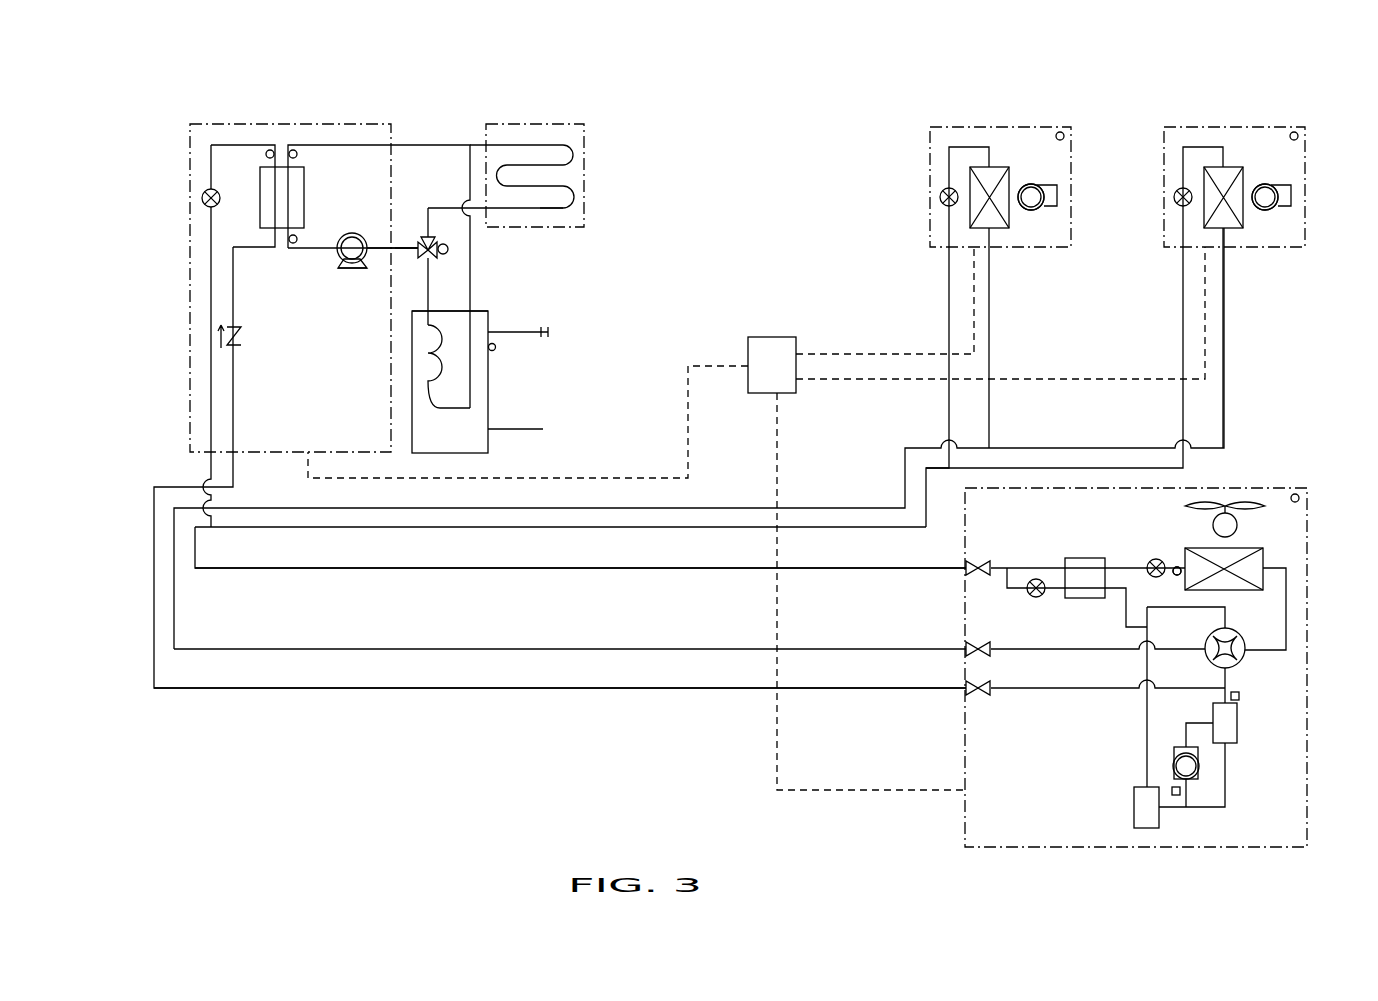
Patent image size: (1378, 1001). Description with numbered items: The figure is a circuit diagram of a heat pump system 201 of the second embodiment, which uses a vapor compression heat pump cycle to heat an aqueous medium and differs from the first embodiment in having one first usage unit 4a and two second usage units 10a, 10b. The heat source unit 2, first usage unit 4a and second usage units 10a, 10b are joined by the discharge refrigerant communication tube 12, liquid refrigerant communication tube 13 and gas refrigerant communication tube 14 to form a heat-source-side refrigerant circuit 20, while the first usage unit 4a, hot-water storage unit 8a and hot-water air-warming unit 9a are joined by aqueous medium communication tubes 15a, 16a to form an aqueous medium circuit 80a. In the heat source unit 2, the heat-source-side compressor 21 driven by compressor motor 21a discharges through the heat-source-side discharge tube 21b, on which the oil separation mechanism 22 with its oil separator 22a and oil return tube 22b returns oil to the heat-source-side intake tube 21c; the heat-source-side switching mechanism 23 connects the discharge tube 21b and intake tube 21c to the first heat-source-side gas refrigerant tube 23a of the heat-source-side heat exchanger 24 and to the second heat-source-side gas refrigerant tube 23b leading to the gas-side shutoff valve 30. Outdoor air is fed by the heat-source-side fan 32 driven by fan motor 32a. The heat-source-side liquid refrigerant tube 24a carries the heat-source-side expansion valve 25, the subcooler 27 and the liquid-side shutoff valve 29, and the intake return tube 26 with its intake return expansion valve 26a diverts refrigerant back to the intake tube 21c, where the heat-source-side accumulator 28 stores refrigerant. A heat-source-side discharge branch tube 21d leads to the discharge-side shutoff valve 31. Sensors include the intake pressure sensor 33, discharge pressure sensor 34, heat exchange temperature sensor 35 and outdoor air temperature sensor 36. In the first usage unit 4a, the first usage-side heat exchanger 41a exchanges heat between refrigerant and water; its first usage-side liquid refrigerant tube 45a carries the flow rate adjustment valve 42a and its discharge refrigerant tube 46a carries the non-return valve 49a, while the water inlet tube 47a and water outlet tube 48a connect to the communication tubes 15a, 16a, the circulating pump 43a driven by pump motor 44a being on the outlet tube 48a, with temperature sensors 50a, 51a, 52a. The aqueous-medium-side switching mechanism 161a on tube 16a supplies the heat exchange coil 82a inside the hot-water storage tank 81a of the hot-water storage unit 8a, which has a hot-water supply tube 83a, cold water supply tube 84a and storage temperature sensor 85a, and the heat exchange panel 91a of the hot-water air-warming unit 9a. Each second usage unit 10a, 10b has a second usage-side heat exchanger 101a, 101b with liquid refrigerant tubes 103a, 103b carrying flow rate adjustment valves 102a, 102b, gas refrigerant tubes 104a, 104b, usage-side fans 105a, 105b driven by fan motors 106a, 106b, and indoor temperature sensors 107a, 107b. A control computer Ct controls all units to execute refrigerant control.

The first usage unit 4a is at (355, 124).
The first usage-side water inlet tube 47a is at (305, 145).
The aqueous medium communication tube 15a is at (416, 145).
The aqueous medium circuit 80a is at (438, 130).
The hot-water air-warming unit 9a is at (548, 124).
The heat exchange panel 91a is at (547, 208).
The first usage-side heat exchange temperature sensor 50a is at (266, 155).
The aqueous medium inlet temperature sensor 51a is at (297, 155).
The aqueous medium outlet temperature sensor 52a is at (297, 239).
The first usage-side heat exchanger 41a is at (304, 196).
The first usage-side flow rate adjustment valve 42a is at (218, 205).
The first usage-side liquid refrigerant tube 45a is at (190, 290).
The first usage-side discharge refrigerant tube 46a is at (235, 284).
The first usage-side discharge non-return valve 49a is at (243, 340).
The circulating pump motor 44a is at (360, 236).
The circulating pump 43a is at (346, 280).
The first usage-side water outlet tube 48a is at (382, 247).
The aqueous medium communication tube 16a is at (408, 252).
The aqueous-medium-side switching mechanism 161a is at (448, 249).
The hot-water storage unit 8a is at (496, 318).
The hot-water storage tank 81a is at (484, 313).
The heat exchange coil 82a is at (426, 398).
The hot-water supply tube 83a is at (519, 333).
The hot-water storage temperature sensor 85a is at (493, 351).
The cold water supply tube 84a is at (519, 430).
The liquid refrigerant communication tube 13 is at (487, 570).
The gas refrigerant communication tube 14 is at (547, 649).
The discharge refrigerant communication tube 12 is at (487, 690).
The control computer Ct is at (750, 340).
The second usage unit 10a is at (1042, 127).
The second usage-side liquid refrigerant tube 103a is at (960, 147).
The second usage-side gas refrigerant tube 104a is at (992, 248).
The second usage-side heat exchanger 101a is at (1002, 170).
The second usage-side flow rate adjustment valve 102a is at (938, 197).
The usage-side fan motor 106a is at (1045, 190).
The usage-side fan 105a is at (1046, 212).
The indoor temperature sensor 107a is at (1065, 136).
The second usage unit 10b is at (1268, 127).
The heat pump system 201 is at (1245, 115).
The second usage-side liquid refrigerant tube 103b is at (1194, 147).
The second usage-side gas refrigerant tube 104b is at (1226, 248).
The second usage-side heat exchanger 101b is at (1236, 170).
The second usage-side flow rate adjustment valve 102b is at (1175, 203).
The usage-side fan motor 106b is at (1292, 194).
The usage-side fan 105b is at (1280, 212).
The indoor temperature sensor 107b is at (1299, 136).
The heat source unit 2 is at (1250, 488).
The heat-source-side refrigerant circuit 20 is at (955, 705).
The outdoor air temperature sensor 36 is at (1300, 498).
The liquid-side shutoff valve 29 is at (984, 560).
The gas-side shutoff valve 30 is at (984, 641).
The discharge-side shutoff valve 31 is at (984, 698).
The subcooler 27 is at (1080, 558).
The intake return tube 26 is at (1122, 611).
The intake return expansion valve 26a is at (1036, 598).
The heat-source-side expansion valve 25 is at (1150, 560).
The heat-source-side liquid refrigerant tube 24a is at (1175, 567).
The heat-source-side heat exchange temperature sensor 35 is at (1176, 576).
The heat-source-side heat exchanger 24 is at (1244, 590).
The heat-source-side fan 32 is at (1262, 510).
The heat-source-side fan motor 32a is at (1237, 528).
The heat-source-side switching mechanism 23 is at (1244, 660).
The first heat-source-side gas refrigerant tube 23a is at (1307, 612).
The second heat-source-side gas refrigerant tube 23b is at (1053, 650).
The heat-source-side discharge branch tube 21d is at (1057, 690).
The heat-source-side discharge tube 21b is at (1223, 672).
The heat-source-side discharge pressure sensor 34 is at (1240, 696).
The oil separation mechanism 22 is at (1248, 732).
The oil separator 22a is at (1237, 745).
The oil return tube 22b is at (1228, 774).
The heat-source-side compressor 21 is at (1183, 750).
The heat-source-side intake tube 21c is at (1146, 743).
The heat-source-side compressor motor 21a is at (1188, 780).
The heat-source-side intake pressure sensor 33 is at (1172, 790).
The heat-source-side accumulator 28 is at (1134, 810).